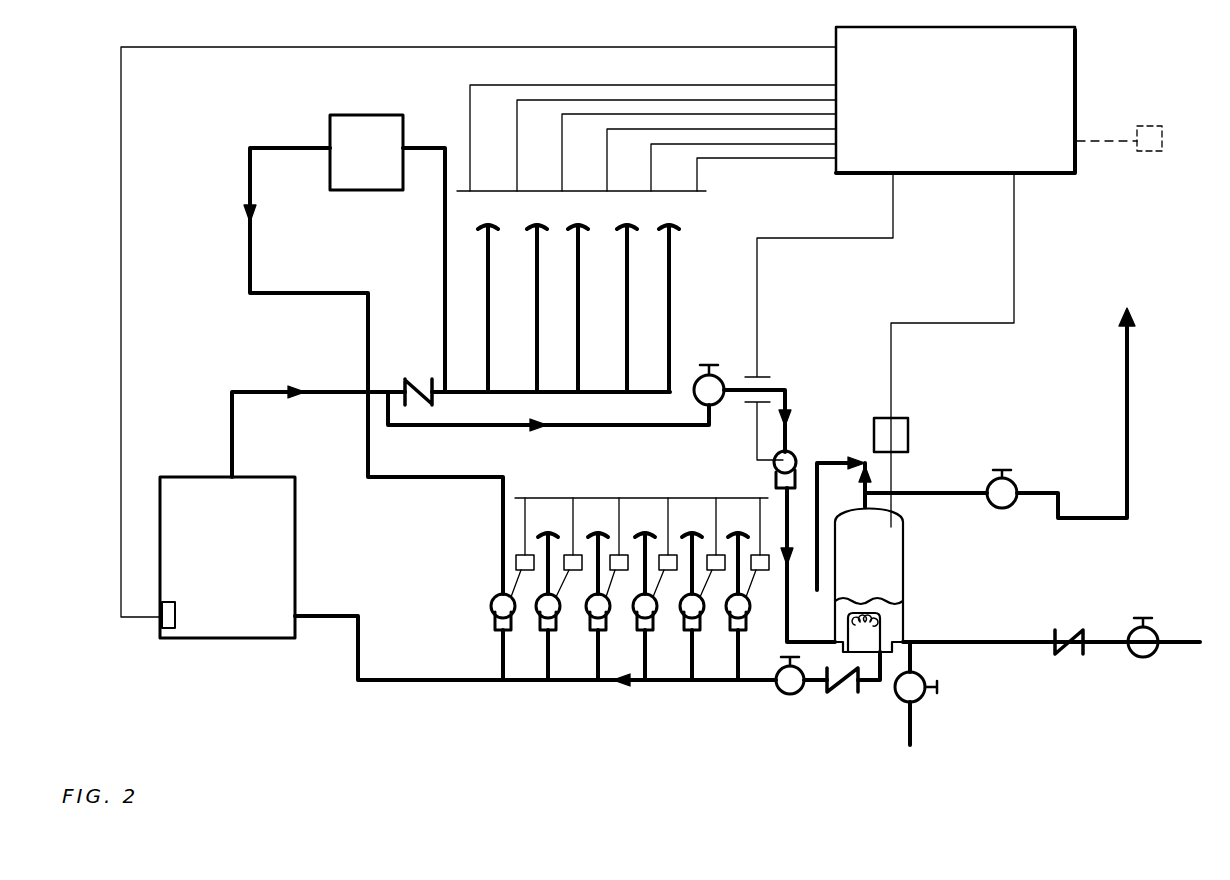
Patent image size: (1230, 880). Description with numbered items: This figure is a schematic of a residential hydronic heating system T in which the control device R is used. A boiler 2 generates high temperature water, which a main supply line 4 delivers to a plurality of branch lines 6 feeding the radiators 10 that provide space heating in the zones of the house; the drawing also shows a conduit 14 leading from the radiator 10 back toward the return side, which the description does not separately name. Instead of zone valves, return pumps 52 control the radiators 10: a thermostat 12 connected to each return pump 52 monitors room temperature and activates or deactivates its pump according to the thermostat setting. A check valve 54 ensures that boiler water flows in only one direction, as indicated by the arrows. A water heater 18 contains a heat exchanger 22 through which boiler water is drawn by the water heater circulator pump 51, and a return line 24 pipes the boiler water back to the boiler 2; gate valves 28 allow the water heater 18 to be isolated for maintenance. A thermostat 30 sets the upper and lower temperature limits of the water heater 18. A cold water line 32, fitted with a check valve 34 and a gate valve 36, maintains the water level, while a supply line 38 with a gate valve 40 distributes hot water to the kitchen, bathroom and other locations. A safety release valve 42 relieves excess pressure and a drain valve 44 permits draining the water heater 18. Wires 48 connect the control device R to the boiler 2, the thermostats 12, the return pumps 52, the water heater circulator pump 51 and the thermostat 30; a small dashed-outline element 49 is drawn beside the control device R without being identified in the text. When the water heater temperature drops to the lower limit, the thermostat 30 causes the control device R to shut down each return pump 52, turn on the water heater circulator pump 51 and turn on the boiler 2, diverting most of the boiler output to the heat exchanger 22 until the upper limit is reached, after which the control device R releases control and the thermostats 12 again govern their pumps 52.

The hydronic heating system T is at (116, 200).
The control device R is at (1090, 68).
The boiler 2 is at (283, 572).
The main supply line 4 is at (270, 390).
The branch lines 6 is at (445, 322).
The radiators 10 is at (364, 128).
The thermostat 12 is at (530, 553).
The return line 14 is at (253, 266).
The water heater 18 is at (891, 557).
The heat exchanger 22 is at (873, 632).
The return line 24 is at (462, 683).
The gate valves 28 is at (717, 408).
The thermostat 30 is at (908, 437).
The cold water line 32 is at (1006, 645).
The check valve 34 is at (1068, 629).
The gate valve 36 is at (1158, 632).
The supply line 38 is at (1128, 447).
The gate valve 40 is at (1013, 480).
The safety release valve 42 is at (861, 460).
The drain valve 44 is at (921, 700).
The wires 48 is at (716, 18).
The remote unit 49 is at (1165, 141).
The water heater circulator pump 51 is at (794, 456).
The return pumps 52 is at (491, 606).
The check valve 54 is at (418, 378).